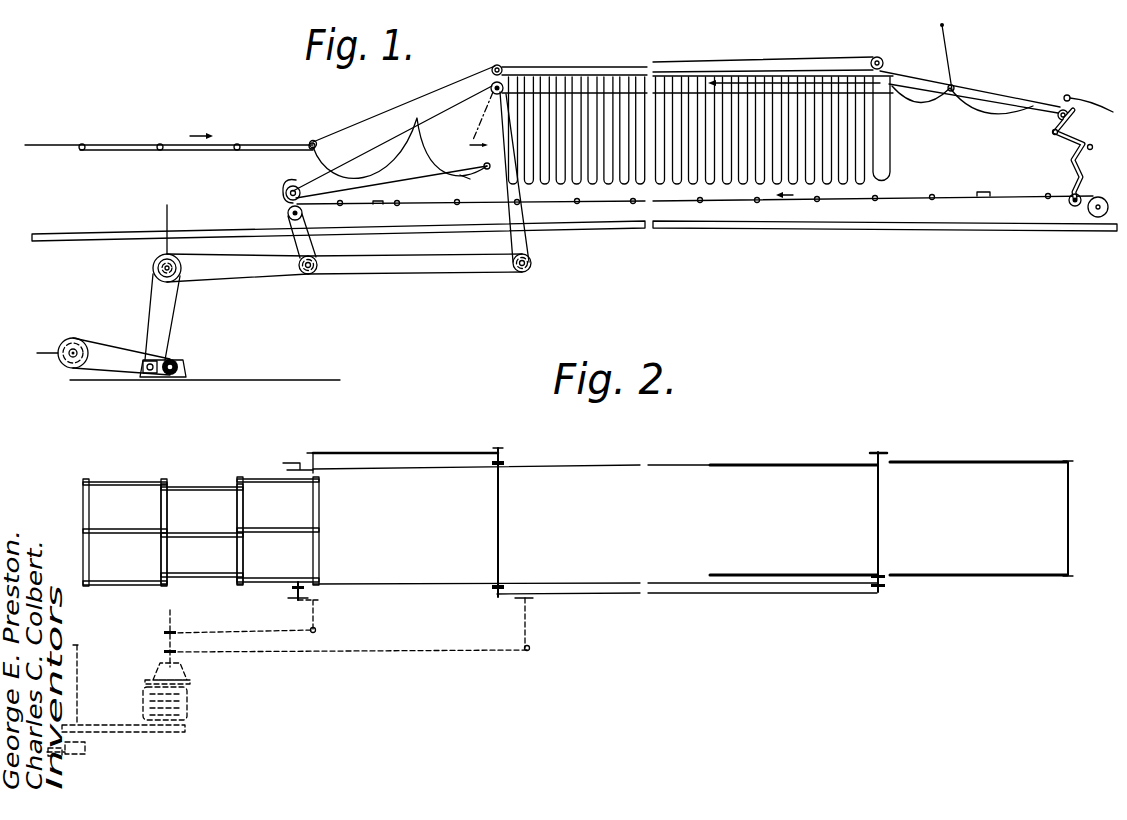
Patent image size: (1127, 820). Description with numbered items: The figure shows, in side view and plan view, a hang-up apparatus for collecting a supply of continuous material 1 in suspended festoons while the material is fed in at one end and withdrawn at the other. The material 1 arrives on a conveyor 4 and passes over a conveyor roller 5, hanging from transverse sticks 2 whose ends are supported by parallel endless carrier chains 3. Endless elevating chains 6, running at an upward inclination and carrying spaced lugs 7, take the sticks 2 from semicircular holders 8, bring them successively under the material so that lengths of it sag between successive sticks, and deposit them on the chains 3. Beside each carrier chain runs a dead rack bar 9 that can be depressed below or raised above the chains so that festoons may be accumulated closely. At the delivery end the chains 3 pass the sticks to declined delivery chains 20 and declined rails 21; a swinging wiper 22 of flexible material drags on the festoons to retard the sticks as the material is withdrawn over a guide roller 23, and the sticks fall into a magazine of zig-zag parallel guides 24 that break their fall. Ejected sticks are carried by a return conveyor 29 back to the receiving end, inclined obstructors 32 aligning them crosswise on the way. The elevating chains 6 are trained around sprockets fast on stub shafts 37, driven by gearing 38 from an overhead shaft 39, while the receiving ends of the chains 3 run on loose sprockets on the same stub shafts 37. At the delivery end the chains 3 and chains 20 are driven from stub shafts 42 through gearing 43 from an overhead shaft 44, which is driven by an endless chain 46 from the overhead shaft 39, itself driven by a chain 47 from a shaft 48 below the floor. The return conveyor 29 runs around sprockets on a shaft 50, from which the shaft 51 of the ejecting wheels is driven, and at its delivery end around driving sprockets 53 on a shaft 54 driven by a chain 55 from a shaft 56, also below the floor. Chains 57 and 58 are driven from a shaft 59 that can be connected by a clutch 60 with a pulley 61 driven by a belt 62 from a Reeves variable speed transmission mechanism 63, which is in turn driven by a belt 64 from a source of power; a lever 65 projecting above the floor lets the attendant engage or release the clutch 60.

In FIG. 1, the continuous material 1 is at (432, 157).
In FIG. 1, the sticks 2 is at (640, 74).
In FIG. 1, the endless carrier chains 3 is at (580, 76).
In FIG. 2, the endless carrier chains 3 is at (630, 463).
In FIG. 1, the conveyor 4 is at (121, 151).
In FIG. 2, the conveyor 4 is at (130, 486).
In FIG. 1, the conveyor roller 5 is at (313, 140).
In FIG. 2, the conveyor roller 5 is at (321, 507).
In FIG. 1, the endless elevating chains 6 is at (389, 123).
In FIG. 2, the endless elevating chains 6 is at (412, 472).
In FIG. 1, the lugs 7 is at (462, 175).
In FIG. 1, the holders 8 is at (287, 182).
In FIG. 2, the holders 8 is at (293, 470).
In FIG. 1, the dead rack bars 9 is at (748, 82).
In FIG. 2, the dead rack bars 9 is at (777, 468).
In FIG. 2, the declined delivery chains 20 is at (1020, 464).
In FIG. 1, the declined rails 21 is at (1050, 107).
In FIG. 2, the declined rails 21 is at (988, 460).
In FIG. 1, the swinging wiper 22 is at (956, 73).
In FIG. 1, the guide roller 23 is at (1087, 92).
In FIG. 1, the magazine guides 24 is at (1078, 167).
In FIG. 1, the return conveyor 29 is at (955, 195).
In FIG. 1, the inclined obstructors 32 is at (383, 205).
In FIG. 1, the stub shafts 37 is at (474, 119).
In FIG. 2, the gearing 38 is at (505, 463).
In FIG. 2, the overhead shaft 39 is at (503, 518).
In FIG. 1, the stub shafts 42 is at (882, 100).
In FIG. 2, the gearing 43 is at (887, 452).
In FIG. 1, the overhead shaft 44 is at (881, 58).
In FIG. 2, the overhead shaft 44 is at (883, 517).
In FIG. 1, the endless chain 46 is at (833, 56).
In FIG. 2, the endless chain 46 is at (793, 594).
In FIG. 1, the chain 47 is at (538, 250).
In FIG. 2, the chain 47 is at (513, 600).
In FIG. 1, the shaft 48 is at (532, 270).
In FIG. 2, the shaft 48 is at (533, 628).
In FIG. 1, the shaft 50 is at (1105, 195).
In FIG. 1, the shaft 51 is at (1068, 202).
In FIG. 1, the driving sprockets 53 is at (287, 213).
In FIG. 1, the shaft 54 is at (290, 226).
In FIG. 1, the chain 55 is at (313, 246).
In FIG. 2, the chain 55 is at (287, 603).
In FIG. 1, the shaft 56 is at (316, 273).
In FIG. 2, the shaft 56 is at (320, 615).
In FIG. 1, the chain 57 is at (423, 274).
In FIG. 2, the chain 57 is at (423, 652).
In FIG. 1, the chain 58 is at (295, 275).
In FIG. 2, the chain 58 is at (253, 635).
In FIG. 1, the shaft 59 is at (153, 270).
In FIG. 2, the shaft 59 is at (175, 618).
In FIG. 2, the clutch 60 is at (190, 676).
In FIG. 1, the pulley 61 is at (175, 280).
In FIG. 2, the pulley 61 is at (193, 684).
In FIG. 1, the belt 62 is at (175, 327).
In FIG. 1, the Reeves variable speed transmission mechanism 63 is at (193, 369).
In FIG. 1, the belt 64 is at (137, 347).
In FIG. 2, the belt 64 is at (137, 724).
In FIG. 1, the lever 65 is at (170, 212).